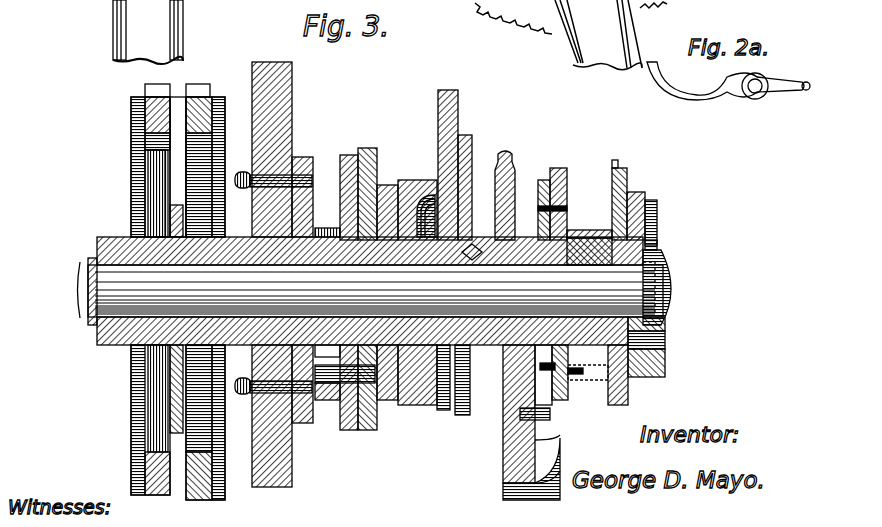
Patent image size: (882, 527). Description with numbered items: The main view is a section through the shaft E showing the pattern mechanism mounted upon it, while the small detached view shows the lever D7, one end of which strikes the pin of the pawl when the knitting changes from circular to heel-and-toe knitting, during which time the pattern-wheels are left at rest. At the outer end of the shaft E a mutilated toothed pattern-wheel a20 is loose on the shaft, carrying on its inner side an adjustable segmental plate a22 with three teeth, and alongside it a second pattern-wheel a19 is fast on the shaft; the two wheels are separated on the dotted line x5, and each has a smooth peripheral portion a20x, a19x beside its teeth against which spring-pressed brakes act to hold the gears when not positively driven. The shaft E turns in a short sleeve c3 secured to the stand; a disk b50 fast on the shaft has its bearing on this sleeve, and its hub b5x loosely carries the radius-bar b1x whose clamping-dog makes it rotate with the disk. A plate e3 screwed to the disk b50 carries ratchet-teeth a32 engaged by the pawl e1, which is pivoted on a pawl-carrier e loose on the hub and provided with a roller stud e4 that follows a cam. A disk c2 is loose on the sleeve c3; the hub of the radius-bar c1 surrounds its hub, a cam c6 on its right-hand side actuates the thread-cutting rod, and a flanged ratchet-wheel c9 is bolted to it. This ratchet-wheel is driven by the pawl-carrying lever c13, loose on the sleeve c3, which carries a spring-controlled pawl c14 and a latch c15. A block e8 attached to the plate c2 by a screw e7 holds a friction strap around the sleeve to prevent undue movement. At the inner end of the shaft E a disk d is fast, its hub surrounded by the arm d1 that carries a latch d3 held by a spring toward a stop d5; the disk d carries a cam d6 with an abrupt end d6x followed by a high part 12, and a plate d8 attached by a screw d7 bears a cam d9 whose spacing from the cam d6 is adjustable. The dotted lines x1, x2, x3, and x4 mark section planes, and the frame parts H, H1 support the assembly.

In FIG. 3, the shaft E is at (88, 290).
In FIG. 3, the toothed pattern-wheel a20 is at (149, 113).
In FIG. 3, the smooth peripheral portion a20x is at (140, 97).
In FIG. 3, the pattern-wheel a19 is at (203, 85).
In FIG. 3, the smooth peripheral portion a19x is at (225, 97).
In FIG. 3, the segmental plate a22 is at (170, 370).
In FIG. 3, the dotted line x5 is at (180, 500).
In FIG. 3, the frame plate H1 is at (292, 116).
In FIG. 3, the frame H is at (278, 487).
In FIG. 3, the pawl-carrier e is at (320, 228).
In FIG. 3, the radius-bar c1 is at (348, 155).
In FIG. 3, the disk c2 is at (368, 148).
In FIG. 3, the cam c6 is at (385, 185).
In FIG. 3, the ratchet-wheel c9 is at (420, 195).
In FIG. 3, the spring-controlled pawl c14 is at (430, 405).
In FIG. 3, the latch c15 is at (450, 410).
In FIG. 3, the pawl-carrying lever c13 is at (472, 111).
In FIG. 3, the sleeve c3 is at (473, 233).
In FIG. 3, the dotted line x2 is at (483, 465).
In FIG. 3, the dotted line x3 is at (397, 480).
In FIG. 3, the dotted line x4 is at (340, 480).
In FIG. 3, the plate e3 is at (505, 155).
In FIG. 3, the ratchet-teeth a32 is at (543, 180).
In FIG. 3, the disk b50 is at (572, 168).
In FIG. 3, the radius-bar b1x is at (587, 203).
In FIG. 3, the arm d1 is at (588, 230).
In FIG. 3, the dotted line x1 is at (590, 460).
In FIG. 3, the disk d is at (622, 168).
In FIG. 3, the plate d8 is at (640, 192).
In FIG. 3, the cam d9 is at (657, 203).
In FIG. 3, the screw d7 is at (655, 240).
In FIG. 3, the hub b5x is at (672, 258).
In FIG. 3, the cam d6 is at (665, 328).
In FIG. 3, the high part 12 is at (665, 342).
In FIG. 3, the abrupt end d6x is at (652, 365).
In FIG. 3, the pawl e1 is at (530, 412).
In FIG. 3, the roller or stud e4 is at (520, 500).
In FIG. 3, the screw e7 is at (360, 430).
In FIG. 3, the block e8 is at (330, 400).
In FIG. 3, the latch d3 is at (578, 380).
In FIG. 3, the stop d5 is at (582, 385).
In FIG. 2A, the lever D7 is at (731, 97).